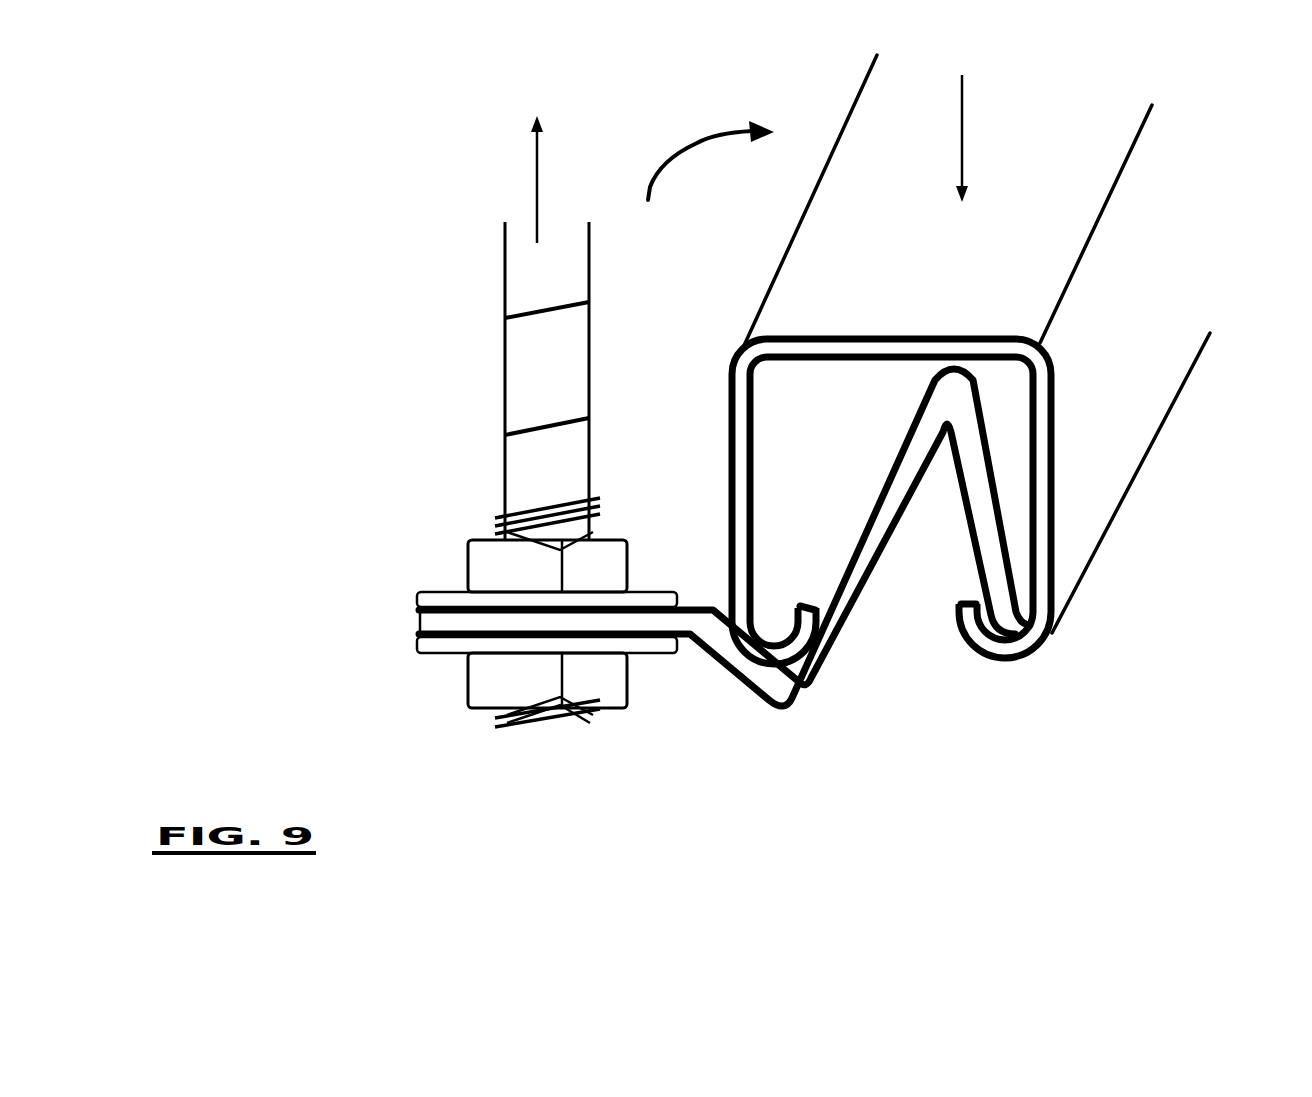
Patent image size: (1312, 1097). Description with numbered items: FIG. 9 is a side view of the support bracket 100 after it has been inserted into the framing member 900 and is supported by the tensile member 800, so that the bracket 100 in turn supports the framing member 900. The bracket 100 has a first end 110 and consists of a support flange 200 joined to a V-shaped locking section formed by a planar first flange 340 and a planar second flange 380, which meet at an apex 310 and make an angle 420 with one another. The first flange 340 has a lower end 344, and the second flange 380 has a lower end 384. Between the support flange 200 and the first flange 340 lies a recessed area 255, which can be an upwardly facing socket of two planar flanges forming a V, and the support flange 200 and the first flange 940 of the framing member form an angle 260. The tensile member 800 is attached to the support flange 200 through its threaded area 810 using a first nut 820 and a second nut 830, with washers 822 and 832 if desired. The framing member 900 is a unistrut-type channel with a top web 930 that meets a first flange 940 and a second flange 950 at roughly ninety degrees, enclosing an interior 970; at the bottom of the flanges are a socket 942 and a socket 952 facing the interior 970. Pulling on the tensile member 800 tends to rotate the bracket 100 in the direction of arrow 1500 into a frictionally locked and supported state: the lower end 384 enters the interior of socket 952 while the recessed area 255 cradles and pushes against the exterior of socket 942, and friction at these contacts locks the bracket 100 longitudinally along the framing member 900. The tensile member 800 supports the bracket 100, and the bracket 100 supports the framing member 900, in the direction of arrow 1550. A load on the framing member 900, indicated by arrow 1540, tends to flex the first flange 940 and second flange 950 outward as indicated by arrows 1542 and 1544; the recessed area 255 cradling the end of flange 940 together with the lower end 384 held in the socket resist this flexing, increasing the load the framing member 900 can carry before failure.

The support bracket 100 is at (701, 703).
The first end 110 is at (417, 630).
The support flange 200 is at (548, 620).
The recessed area 255 is at (775, 675).
The angle 260 is at (732, 543).
The apex 310 is at (951, 372).
The first flange 340 is at (850, 590).
The lower end 344 is at (792, 705).
The second flange 380 is at (960, 553).
The lower end 384 is at (1050, 638).
The angle 420 is at (953, 512).
The tensile member 800 is at (523, 383).
The threaded area 810 is at (497, 520).
The first nut 820 is at (482, 565).
The washer 822 is at (417, 597).
The second nut 830 is at (477, 682).
The washer 832 is at (427, 652).
The framing member 900 is at (1072, 338).
The top web 930 is at (840, 338).
The first flange 940 is at (727, 440).
The socket 942 is at (772, 630).
The second flange 950 is at (1060, 438).
The socket 952 is at (1020, 660).
The interior 970 is at (782, 467).
The arrow 1500 is at (695, 175).
The arrow 1540 is at (967, 125).
The arrow 1542 is at (677, 452).
The arrow 1544 is at (1153, 522).
The arrow 1550 is at (537, 168).